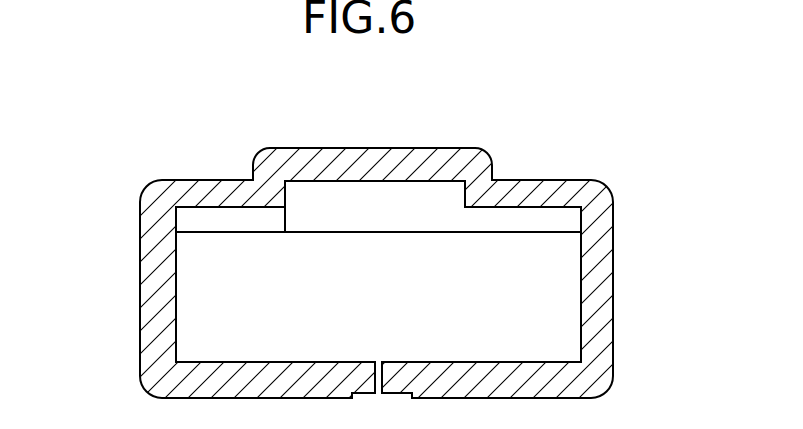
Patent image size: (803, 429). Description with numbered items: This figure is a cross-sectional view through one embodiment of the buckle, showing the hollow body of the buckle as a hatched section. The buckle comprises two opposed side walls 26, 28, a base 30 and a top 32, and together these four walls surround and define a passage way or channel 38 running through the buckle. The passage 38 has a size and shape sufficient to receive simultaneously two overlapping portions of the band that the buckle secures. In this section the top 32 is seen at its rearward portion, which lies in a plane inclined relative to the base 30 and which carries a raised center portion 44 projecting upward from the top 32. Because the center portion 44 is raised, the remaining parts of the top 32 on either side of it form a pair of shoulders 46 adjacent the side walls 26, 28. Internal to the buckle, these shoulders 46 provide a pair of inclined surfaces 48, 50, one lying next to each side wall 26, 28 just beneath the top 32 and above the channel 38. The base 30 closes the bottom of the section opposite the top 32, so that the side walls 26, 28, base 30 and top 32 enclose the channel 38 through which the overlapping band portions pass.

The side wall 26 is at (140, 331).
The side wall 28 is at (613, 323).
The base 30 is at (470, 398).
The top 32 is at (366, 137).
The passage way 38 is at (390, 312).
The raised center portion 44 is at (415, 148).
The shoulders 46 is at (203, 180).
The inclined surface 48 is at (202, 223).
The inclined surface 50 is at (563, 223).